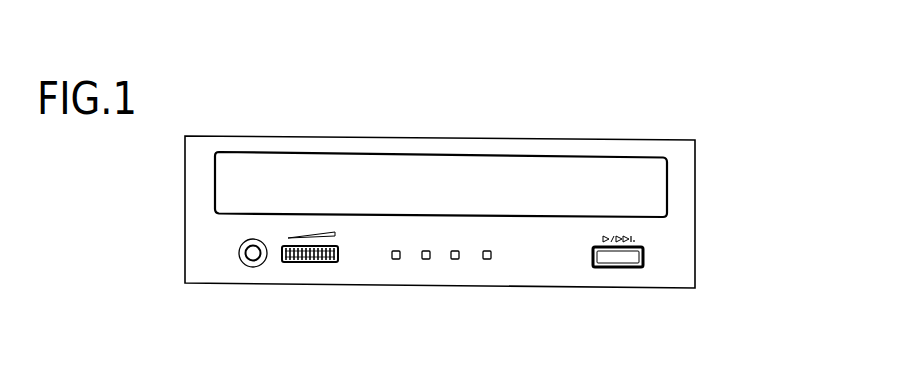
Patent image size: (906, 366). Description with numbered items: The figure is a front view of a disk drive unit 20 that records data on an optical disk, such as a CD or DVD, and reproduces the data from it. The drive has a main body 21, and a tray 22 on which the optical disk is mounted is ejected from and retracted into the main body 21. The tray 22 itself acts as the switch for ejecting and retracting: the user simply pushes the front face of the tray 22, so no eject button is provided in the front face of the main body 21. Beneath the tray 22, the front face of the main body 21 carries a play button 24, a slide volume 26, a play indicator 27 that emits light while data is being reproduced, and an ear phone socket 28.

The disk drive unit 20 is at (609, 38).
The main body 21 is at (677, 222).
The tray 22 is at (538, 176).
The play button 24 is at (623, 260).
The slide volume 26 is at (322, 262).
The play indicator 27 is at (456, 262).
The ear phone socket 28 is at (252, 258).